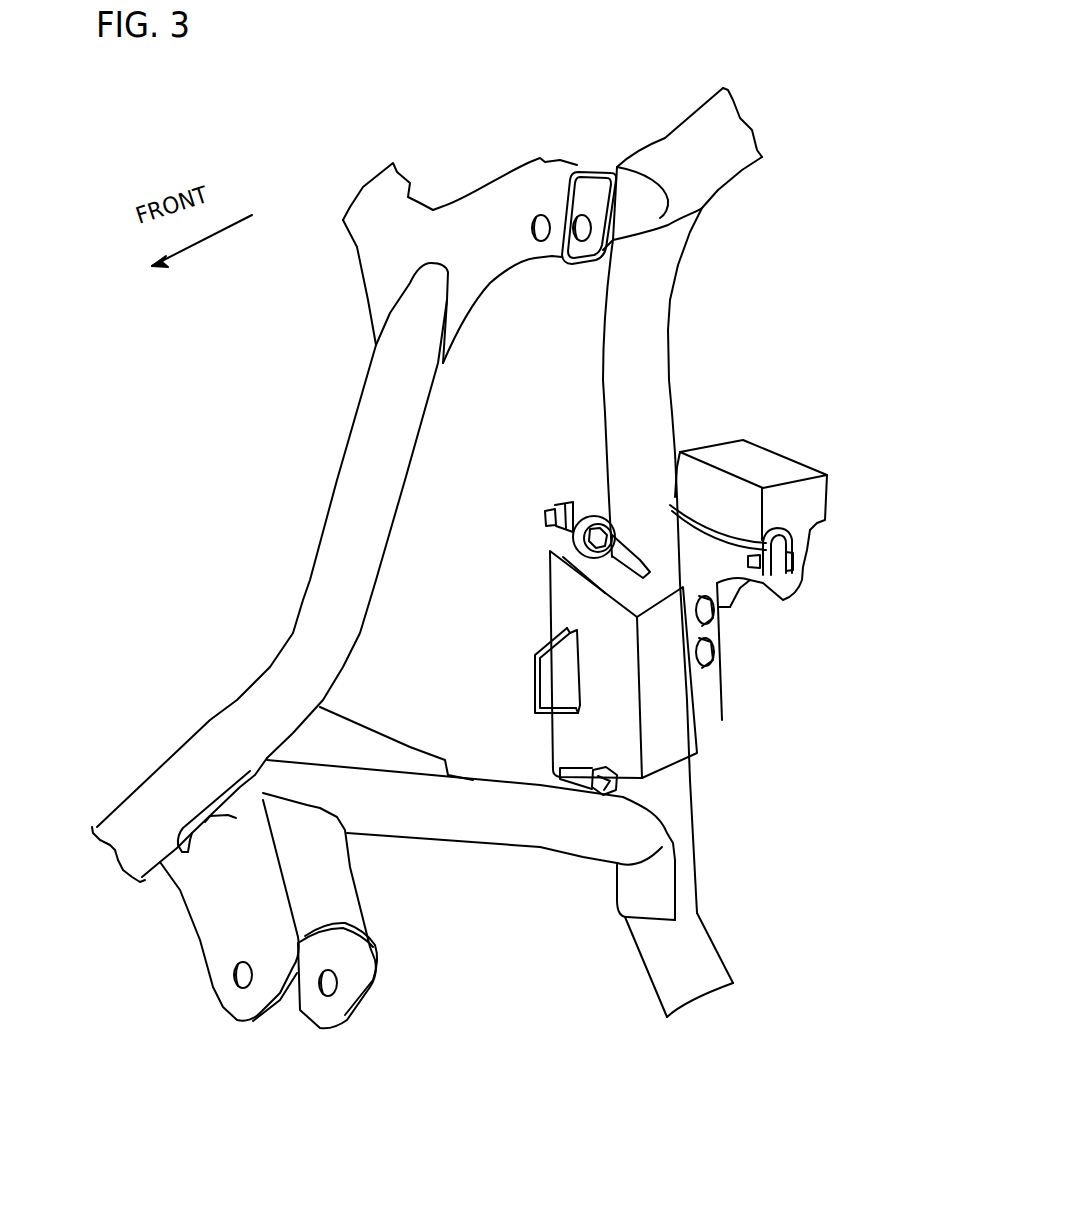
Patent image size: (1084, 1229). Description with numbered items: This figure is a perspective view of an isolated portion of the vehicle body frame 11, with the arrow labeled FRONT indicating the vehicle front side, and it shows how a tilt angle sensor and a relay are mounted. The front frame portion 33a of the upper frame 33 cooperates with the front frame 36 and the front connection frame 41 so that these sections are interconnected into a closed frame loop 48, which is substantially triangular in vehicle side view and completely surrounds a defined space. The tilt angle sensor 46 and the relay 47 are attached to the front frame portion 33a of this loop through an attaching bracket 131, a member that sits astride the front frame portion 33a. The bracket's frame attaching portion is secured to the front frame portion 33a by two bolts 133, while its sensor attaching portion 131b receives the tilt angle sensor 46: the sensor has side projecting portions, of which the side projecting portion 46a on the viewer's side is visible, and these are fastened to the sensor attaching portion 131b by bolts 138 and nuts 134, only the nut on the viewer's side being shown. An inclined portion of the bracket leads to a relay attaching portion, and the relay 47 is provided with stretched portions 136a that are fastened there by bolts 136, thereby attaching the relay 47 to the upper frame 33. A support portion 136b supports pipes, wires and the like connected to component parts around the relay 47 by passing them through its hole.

The body frame / main frame tube 11 is at (205, 718).
The upper frame 33 is at (700, 118).
The front frame portion 33a is at (656, 324).
The front frame 36 is at (323, 596).
The front connection frame 41 is at (441, 827).
The tilt angle sensor 46 is at (790, 447).
The side projecting portion 46a is at (783, 532).
The relay 47 is at (701, 764).
The closed frame loop 48 is at (322, 500).
The attaching bracket 131 is at (720, 660).
The sensor attaching portion 131b is at (700, 540).
The bolts 133 is at (718, 635).
The nuts 134 is at (767, 607).
The bolts 136 is at (598, 538).
The stretched portions 136a is at (545, 517).
The support portion 136b is at (537, 680).
The bolts 138 is at (787, 575).